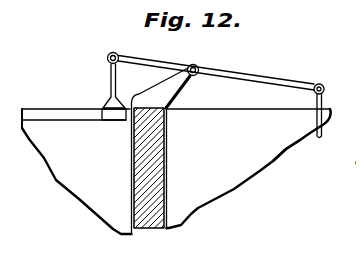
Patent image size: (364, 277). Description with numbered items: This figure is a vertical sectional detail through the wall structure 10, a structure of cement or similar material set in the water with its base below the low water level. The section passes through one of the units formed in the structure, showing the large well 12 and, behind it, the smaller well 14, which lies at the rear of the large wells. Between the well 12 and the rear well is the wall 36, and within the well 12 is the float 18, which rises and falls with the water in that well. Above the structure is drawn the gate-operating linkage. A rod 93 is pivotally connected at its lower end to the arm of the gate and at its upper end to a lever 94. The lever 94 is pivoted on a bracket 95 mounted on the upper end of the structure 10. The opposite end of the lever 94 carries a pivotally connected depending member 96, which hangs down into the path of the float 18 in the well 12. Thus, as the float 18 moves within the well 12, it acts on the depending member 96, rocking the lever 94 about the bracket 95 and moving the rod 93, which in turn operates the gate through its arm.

The wall structure 10 is at (245, 101).
The well 12 is at (44, 84).
The smaller well 14 is at (229, 170).
The float 18 is at (72, 165).
The wall 36 is at (150, 216).
The rod 93 is at (316, 88).
The lever 94 is at (234, 65).
The bracket 95 is at (179, 75).
The depending member 96 is at (103, 98).